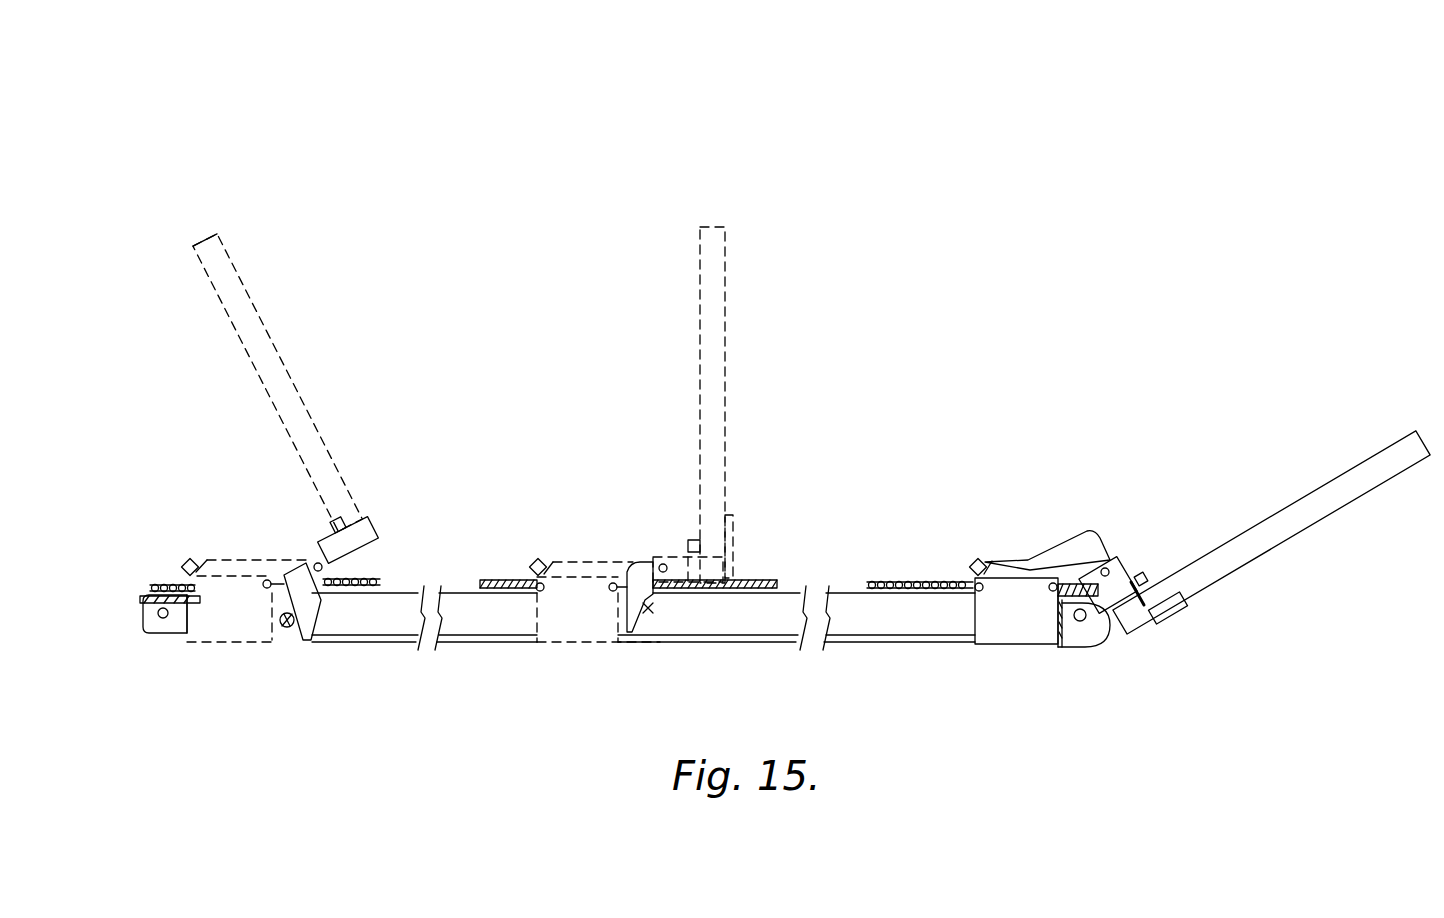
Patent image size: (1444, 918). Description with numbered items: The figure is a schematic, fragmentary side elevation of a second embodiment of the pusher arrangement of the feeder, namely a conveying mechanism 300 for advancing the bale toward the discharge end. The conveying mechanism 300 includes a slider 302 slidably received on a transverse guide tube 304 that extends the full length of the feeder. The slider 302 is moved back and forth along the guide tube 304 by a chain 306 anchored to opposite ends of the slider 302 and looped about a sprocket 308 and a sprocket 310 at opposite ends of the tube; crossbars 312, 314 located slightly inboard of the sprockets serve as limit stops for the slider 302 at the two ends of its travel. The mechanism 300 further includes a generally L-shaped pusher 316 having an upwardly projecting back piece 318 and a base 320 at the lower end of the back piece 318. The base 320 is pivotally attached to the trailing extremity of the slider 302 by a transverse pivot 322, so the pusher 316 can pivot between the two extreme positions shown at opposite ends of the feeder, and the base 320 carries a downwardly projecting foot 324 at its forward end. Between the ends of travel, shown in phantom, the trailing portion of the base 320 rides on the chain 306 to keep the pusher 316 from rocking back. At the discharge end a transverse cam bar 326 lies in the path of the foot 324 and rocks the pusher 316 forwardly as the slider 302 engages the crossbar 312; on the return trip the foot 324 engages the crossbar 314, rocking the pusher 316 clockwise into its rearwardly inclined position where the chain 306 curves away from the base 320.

The conveying mechanism 300 is at (286, 288).
The slider 302 is at (220, 625).
The guide tube 304 is at (500, 625).
The chain 306 is at (917, 585).
The sprocket 308 is at (165, 588).
The sprocket 310 is at (1100, 622).
The crossbar 312 is at (183, 606).
The crossbar 314 is at (1073, 627).
The pusher 316 is at (307, 410).
The back piece 318 is at (243, 345).
The base 320 is at (302, 560).
The pivot 322 is at (305, 558).
The foot 324 is at (313, 612).
The cam bar 326 is at (285, 627).